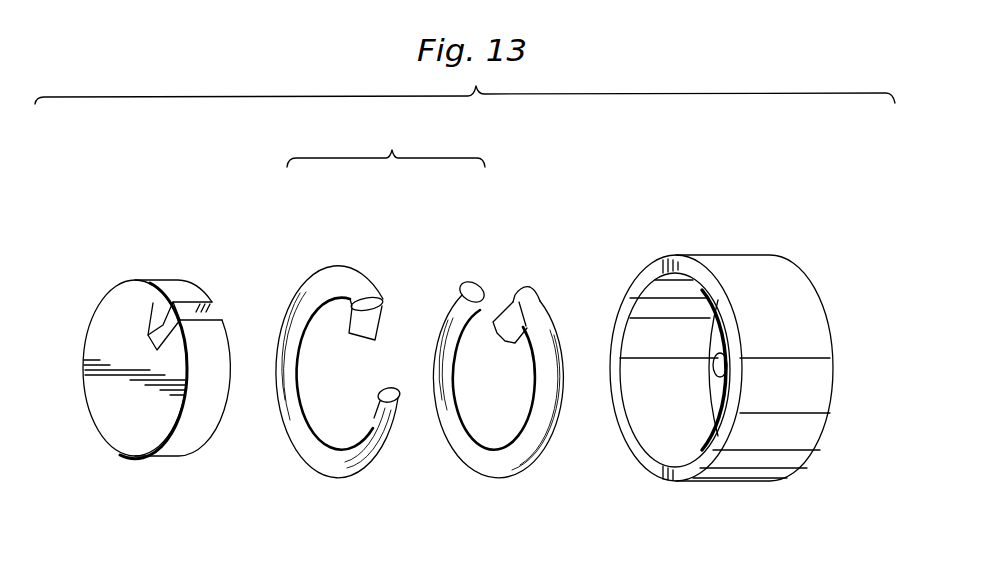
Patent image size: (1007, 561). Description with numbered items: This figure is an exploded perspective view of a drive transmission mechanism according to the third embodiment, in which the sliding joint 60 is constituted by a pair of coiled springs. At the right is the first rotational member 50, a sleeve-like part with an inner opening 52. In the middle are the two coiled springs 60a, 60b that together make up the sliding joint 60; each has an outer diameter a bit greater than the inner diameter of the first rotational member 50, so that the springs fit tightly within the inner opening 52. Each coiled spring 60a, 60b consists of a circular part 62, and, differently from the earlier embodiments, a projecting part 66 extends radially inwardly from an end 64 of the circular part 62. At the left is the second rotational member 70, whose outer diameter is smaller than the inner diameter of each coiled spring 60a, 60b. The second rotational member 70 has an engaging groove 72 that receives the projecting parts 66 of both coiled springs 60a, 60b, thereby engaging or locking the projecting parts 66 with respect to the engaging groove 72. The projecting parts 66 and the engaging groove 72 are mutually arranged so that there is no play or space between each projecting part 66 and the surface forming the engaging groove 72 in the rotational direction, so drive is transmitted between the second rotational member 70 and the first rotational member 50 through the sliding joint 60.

The first rotational member 50 is at (732, 250).
The inner opening 52 is at (716, 375).
The sliding joint 60 is at (386, 139).
The coiled spring 60a is at (338, 258).
The coiled spring 60b is at (443, 292).
The circular part 62 is at (318, 460).
The end 64 is at (377, 298).
The projecting part 66 is at (360, 328).
The second rotational member 70 is at (102, 288).
The engaging groove 72 is at (158, 318).